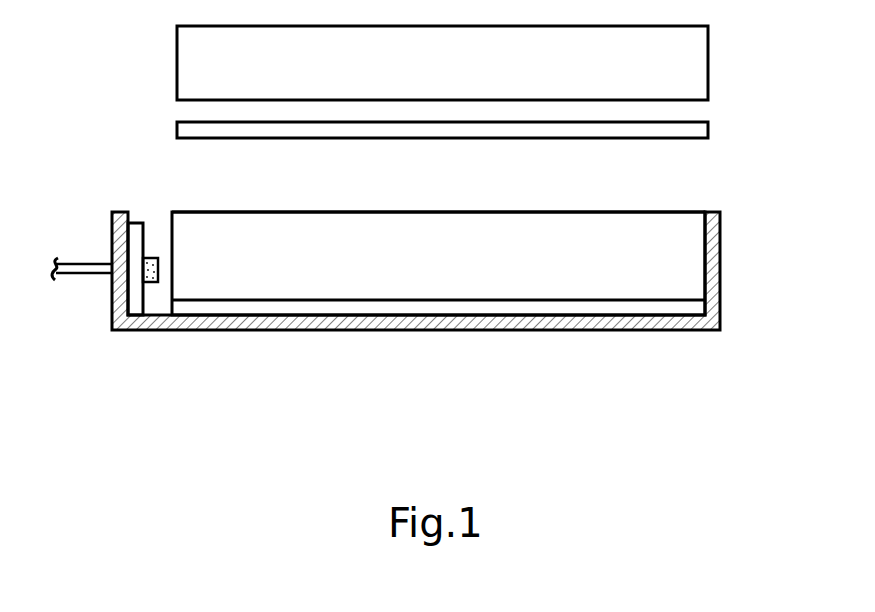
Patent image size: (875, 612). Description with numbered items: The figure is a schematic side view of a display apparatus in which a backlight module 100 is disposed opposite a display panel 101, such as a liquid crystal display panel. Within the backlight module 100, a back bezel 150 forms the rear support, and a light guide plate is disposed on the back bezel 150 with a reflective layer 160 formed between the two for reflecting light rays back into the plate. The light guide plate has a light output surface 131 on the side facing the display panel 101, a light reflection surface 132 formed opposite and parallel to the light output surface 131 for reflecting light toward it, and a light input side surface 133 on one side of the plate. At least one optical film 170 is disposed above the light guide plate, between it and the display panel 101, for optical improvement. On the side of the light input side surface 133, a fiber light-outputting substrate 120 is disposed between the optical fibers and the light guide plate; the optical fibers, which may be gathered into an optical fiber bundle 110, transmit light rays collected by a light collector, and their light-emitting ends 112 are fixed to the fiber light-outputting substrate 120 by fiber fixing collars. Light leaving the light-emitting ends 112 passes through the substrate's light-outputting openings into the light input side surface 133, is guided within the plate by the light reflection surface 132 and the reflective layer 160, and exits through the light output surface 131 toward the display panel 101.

The backlight module 100 is at (728, 267).
The display panel 101 is at (697, 57).
The optical film 170 is at (697, 130).
The optical fiber bundle 110 is at (83, 275).
The fiber light-outputting substrate 120 is at (131, 222).
The light-emitting end 112 is at (152, 258).
The light input side surface 133 is at (178, 282).
The light reflection surface 132 is at (482, 300).
The light output surface 131 is at (542, 212).
The reflective layer 160 is at (645, 305).
The back bezel 150 is at (703, 332).